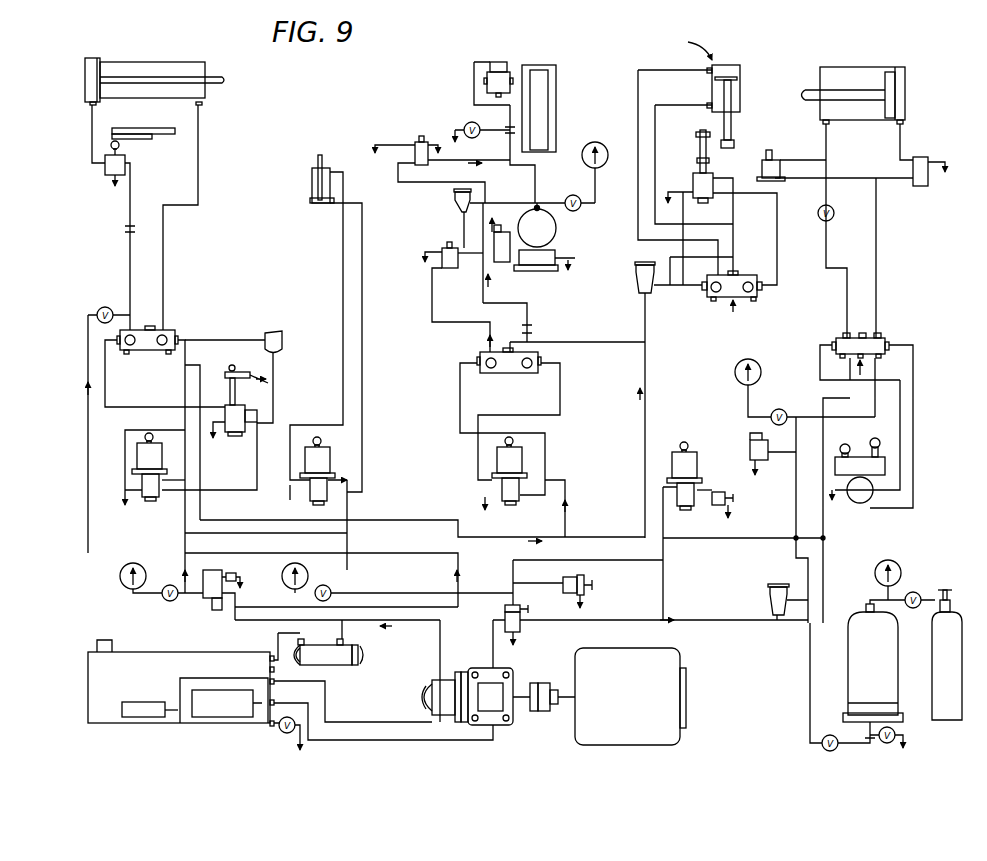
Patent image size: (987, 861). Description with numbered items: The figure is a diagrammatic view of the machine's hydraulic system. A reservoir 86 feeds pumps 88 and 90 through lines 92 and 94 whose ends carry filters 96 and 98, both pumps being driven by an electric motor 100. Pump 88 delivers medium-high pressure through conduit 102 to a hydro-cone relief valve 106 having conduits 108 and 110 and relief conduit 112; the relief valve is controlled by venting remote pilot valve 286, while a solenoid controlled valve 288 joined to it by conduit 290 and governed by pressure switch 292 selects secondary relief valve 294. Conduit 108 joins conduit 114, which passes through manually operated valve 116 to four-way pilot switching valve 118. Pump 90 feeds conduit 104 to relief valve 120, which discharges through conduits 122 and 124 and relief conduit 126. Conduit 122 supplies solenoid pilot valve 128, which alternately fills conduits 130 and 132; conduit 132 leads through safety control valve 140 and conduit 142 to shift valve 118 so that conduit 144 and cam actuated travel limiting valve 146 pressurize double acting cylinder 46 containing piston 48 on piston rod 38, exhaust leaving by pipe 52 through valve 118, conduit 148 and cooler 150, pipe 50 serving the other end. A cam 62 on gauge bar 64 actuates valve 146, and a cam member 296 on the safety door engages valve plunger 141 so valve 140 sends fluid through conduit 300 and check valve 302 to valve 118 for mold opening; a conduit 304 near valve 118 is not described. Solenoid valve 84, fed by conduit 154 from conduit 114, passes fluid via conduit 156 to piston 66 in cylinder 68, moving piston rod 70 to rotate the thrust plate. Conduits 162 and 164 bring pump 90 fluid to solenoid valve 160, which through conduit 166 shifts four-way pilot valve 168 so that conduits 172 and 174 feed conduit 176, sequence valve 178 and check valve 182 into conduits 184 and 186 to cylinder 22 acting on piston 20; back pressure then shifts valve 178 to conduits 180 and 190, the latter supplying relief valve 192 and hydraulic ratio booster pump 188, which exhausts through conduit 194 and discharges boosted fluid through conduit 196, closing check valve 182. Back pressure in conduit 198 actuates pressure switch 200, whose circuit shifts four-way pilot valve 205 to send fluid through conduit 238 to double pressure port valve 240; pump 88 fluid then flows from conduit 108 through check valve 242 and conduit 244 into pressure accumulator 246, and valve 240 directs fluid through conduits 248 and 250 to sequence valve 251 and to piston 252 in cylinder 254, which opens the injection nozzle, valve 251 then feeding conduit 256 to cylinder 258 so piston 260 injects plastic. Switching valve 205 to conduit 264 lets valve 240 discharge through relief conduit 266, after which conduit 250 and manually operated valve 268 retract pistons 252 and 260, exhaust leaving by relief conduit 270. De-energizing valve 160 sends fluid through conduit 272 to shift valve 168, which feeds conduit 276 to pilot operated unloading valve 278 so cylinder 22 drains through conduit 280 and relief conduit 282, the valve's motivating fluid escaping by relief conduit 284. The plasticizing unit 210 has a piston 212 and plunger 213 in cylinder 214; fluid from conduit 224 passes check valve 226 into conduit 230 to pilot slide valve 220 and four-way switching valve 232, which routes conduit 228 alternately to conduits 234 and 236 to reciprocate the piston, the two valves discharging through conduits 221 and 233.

The piston 20 is at (545, 118).
The cylinder 22 is at (528, 95).
The piston rod 38 is at (226, 79).
The double acting cylinder 46 is at (160, 62).
The piston 48 is at (102, 70).
The pipe 50 is at (89, 125).
The pipe 52 is at (201, 128).
The cam 62 is at (140, 139).
The gauge bar 64 is at (167, 130).
The piston 66 is at (312, 190).
The cylinder 68 is at (310, 203).
The piston rod 70 is at (318, 160).
The solenoid valve 84 is at (330, 462).
The reservoir 86 is at (103, 723).
The pump 88 is at (495, 715).
The pump 90 is at (430, 697).
The line 92 is at (378, 742).
The line 94 is at (366, 720).
The screen or filter 96 is at (228, 718).
The screen or filter 98 is at (160, 718).
The electric motor 100 is at (670, 740).
The conduit 102 is at (490, 645).
The conduit 104 is at (438, 643).
The relief valve 106 is at (520, 628).
The conduit 108 is at (539, 621).
The conduit 110 is at (511, 601).
The relief conduit 112 is at (515, 645).
The conduit 114 is at (86, 455).
The manually operated valve 116 is at (98, 310).
The switching valve 118 is at (170, 328).
The relief valve 120 is at (205, 598).
The conduit 122 is at (182, 538).
The conduit 124 is at (221, 610).
The relief conduit 126 is at (240, 580).
The solenoid pilot valve 128 is at (158, 460).
The conduit 130 is at (123, 456).
The conduit 132 is at (254, 467).
The safety control valve 140 is at (228, 410).
The valve plunger 141 is at (238, 396).
The conduit 142 is at (108, 380).
The conduit 144 is at (127, 262).
The cam actuated travel limiting valve 146 is at (107, 170).
The conduit 148 is at (428, 520).
The cooler 150 is at (330, 660).
The conduit 154 is at (349, 507).
The conduit 156 is at (365, 370).
The solenoid control fluid valve 160 is at (520, 460).
The conduit 162 is at (491, 535).
The conduit 164 is at (568, 522).
The conduit 166 is at (458, 395).
The four-way pilot valve 168 is at (503, 373).
The conduit 172 is at (648, 408).
The conduit 174 is at (561, 340).
The conduit 176 is at (430, 303).
The sequence valve 178 is at (445, 250).
The conduit 180 is at (461, 228).
The check valve 182 is at (453, 202).
The conduit 184 is at (500, 201).
The conduit 186 is at (540, 183).
The hydraulic ratio booster pump 188 is at (556, 232).
The conduit 190 is at (474, 256).
The relief valve 192 is at (505, 262).
The conduit 194 is at (570, 262).
The conduit 196 is at (540, 208).
The conduit 198 is at (471, 92).
The pressure switch 200 is at (500, 62).
The four-way pilot valve 205 is at (860, 503).
The plasticizing unit 210 is at (686, 40).
The piston 212 is at (730, 65).
The plunger 213 is at (733, 135).
The cylinder 214 is at (740, 85).
The pilot slide valve 220 is at (700, 180).
The discharge conduit 221 is at (675, 189).
The conduit 224 is at (648, 330).
The check valve 226 is at (648, 293).
The conduit 228 is at (664, 288).
The conduit 230 is at (736, 212).
The four-way switching valve 232 is at (762, 290).
The discharge conduit 233 is at (735, 310).
The conduit 234 is at (678, 68).
The conduit 236 is at (683, 103).
The conduit 238 is at (916, 365).
The double pressure port valve 240 is at (870, 340).
The check valve 242 is at (770, 598).
The conduit 244 is at (808, 657).
The pressure accumulator 246 is at (850, 625).
The conduit 248 is at (879, 296).
The conduit 250 is at (829, 250).
The sequence valve 251 is at (920, 186).
The piston 252 is at (776, 180).
The cylinder 254 is at (778, 160).
The conduit 256 is at (898, 138).
The cylinder 258 is at (897, 67).
The piston 260 is at (888, 72).
The conduit 264 is at (817, 370).
The relief conduit 266 is at (865, 368).
The manually operated valve 268 is at (832, 210).
The relief conduit 270 is at (940, 160).
The conduit 272 is at (563, 385).
The conduit 276 is at (396, 176).
The pilot operated unloading valve 278 is at (417, 145).
The conduit 280 is at (450, 158).
The relief conduit 282 is at (390, 143).
The relief conduit 284 is at (430, 143).
The remote pilot valve 286 is at (584, 578).
The solenoid controlled valve 288 is at (685, 460).
The conduit 290 is at (668, 551).
The pressure switch 292 is at (757, 475).
The secondary relief valve 294 is at (714, 505).
The cam member 296 is at (245, 372).
The conduit 300 is at (276, 368).
The check valve 302 is at (280, 332).
The line 304 is at (183, 388).